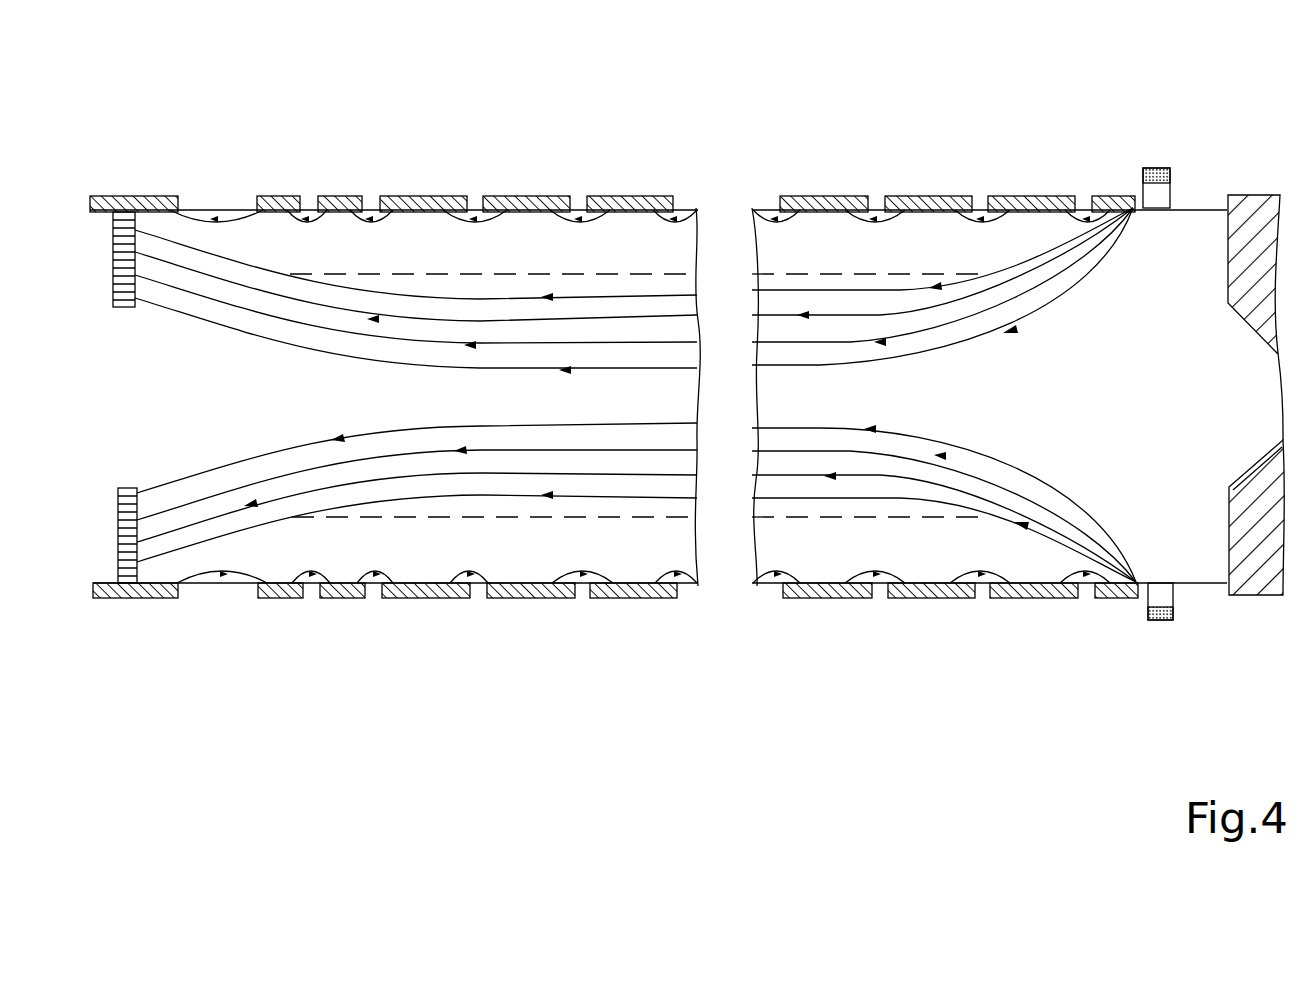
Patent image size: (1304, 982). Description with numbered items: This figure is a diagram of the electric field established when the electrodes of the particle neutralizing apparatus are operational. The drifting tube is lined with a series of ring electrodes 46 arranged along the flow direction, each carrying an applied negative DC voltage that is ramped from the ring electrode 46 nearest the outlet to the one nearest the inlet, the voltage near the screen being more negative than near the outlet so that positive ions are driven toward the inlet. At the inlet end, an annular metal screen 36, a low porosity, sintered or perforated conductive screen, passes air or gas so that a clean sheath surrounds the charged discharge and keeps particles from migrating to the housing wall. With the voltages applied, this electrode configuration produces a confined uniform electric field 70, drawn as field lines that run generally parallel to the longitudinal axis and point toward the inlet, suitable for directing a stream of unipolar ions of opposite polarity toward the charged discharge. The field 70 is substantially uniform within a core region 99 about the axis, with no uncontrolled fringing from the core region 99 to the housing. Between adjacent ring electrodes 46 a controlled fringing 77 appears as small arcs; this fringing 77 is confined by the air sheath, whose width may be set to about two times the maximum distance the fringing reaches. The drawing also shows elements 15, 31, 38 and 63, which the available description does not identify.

The flow passage 15 is at (248, 420).
The end wall 31 is at (1152, 347).
The annular metal screen 36 is at (113, 268).
The sensor 38 is at (1160, 622).
The ring electrode 46 is at (401, 195).
The sensing element 63 is at (1167, 595).
The confined uniform electric field 70 is at (635, 337).
The controlled fringing 77 is at (878, 585).
The core region 99 is at (830, 328).